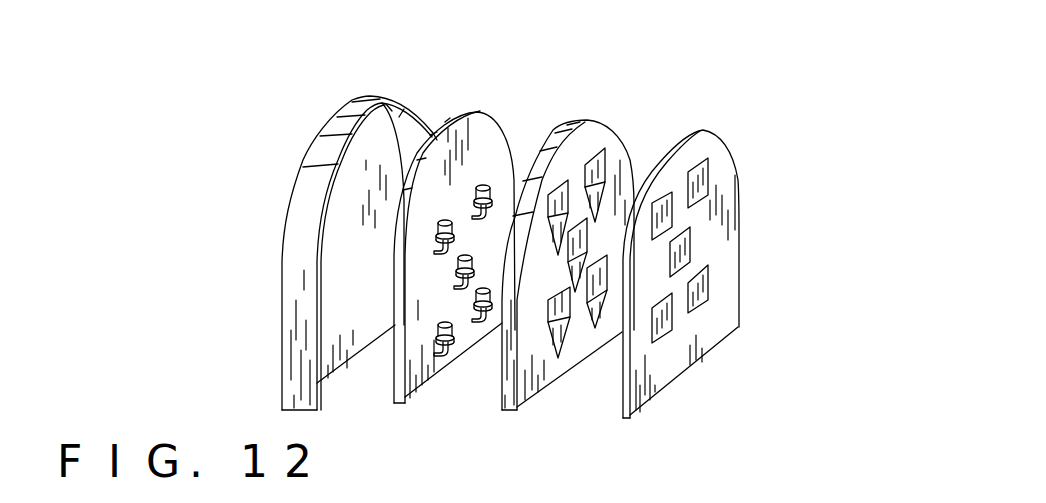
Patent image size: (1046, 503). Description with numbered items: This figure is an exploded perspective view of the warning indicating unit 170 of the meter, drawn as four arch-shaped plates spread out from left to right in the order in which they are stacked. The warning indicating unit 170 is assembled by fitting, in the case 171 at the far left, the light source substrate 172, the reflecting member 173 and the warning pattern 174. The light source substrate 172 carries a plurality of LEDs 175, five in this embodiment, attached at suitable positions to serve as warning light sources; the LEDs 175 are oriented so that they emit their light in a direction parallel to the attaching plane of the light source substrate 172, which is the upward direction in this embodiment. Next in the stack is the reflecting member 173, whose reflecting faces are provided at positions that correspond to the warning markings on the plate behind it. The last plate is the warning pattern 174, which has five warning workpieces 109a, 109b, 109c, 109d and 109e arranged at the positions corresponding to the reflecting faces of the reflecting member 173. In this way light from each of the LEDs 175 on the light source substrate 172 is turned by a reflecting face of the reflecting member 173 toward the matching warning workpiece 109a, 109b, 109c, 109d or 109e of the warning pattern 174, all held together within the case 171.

The warning indicating unit 170 is at (516, 78).
The case 171 is at (353, 103).
The light source substrate 172 is at (467, 113).
The reflecting member 173 is at (578, 118).
The warning pattern 174 is at (677, 133).
The LEDs 175 is at (439, 361).
The warning workpiece 109a is at (708, 185).
The warning workpiece 109b is at (690, 242).
The warning workpiece 109c is at (665, 340).
The warning workpiece 109d is at (703, 308).
The warning workpiece 109e is at (673, 188).